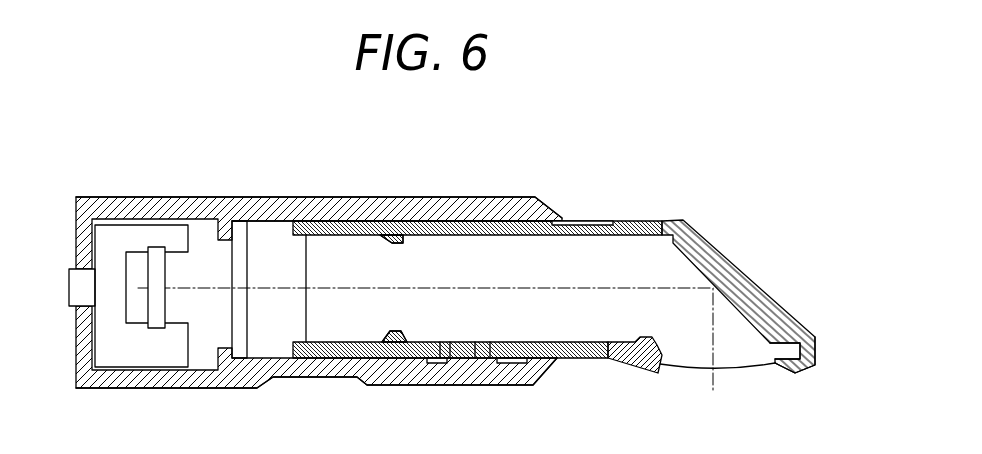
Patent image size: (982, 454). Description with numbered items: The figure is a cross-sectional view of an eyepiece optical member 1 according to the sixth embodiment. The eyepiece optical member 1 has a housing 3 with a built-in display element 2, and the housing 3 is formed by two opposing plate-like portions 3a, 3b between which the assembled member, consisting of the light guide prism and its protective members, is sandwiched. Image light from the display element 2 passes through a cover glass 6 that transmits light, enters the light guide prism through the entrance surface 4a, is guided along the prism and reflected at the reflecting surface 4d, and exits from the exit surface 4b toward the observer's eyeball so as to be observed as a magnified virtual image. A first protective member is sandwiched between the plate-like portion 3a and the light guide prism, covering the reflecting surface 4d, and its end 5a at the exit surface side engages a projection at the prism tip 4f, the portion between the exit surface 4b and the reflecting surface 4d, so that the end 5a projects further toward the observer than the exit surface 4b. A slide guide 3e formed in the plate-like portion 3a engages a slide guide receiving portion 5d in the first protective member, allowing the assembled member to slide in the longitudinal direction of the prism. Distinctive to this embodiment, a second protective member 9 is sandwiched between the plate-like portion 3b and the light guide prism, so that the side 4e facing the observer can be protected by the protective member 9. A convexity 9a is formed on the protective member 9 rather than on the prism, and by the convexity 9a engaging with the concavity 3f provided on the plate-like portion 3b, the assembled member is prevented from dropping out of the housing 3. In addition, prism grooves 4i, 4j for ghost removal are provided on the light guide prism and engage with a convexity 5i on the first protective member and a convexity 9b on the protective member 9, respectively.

The eyepiece optical member 1 is at (677, 147).
The display element 2 is at (92, 288).
The housing 3 is at (171, 197).
The plate-like portion 3a is at (438, 197).
The plate-like portion 3b is at (449, 385).
The slide guide 3e is at (330, 197).
The concavity 3f is at (447, 341).
The entrance surface 4a is at (305, 273).
The exit surface 4b is at (742, 370).
The reflecting surface 4d is at (715, 262).
The side 4e is at (330, 341).
The prism tip 4f is at (792, 343).
The prism groove 4i is at (391, 239).
The prism groove 4j is at (385, 332).
The end of the protective member 5a is at (815, 355).
The slide guide receiving portion 5d is at (587, 222).
The convexity 5i is at (405, 243).
The cover glass 6 is at (232, 270).
The protective member 9 is at (578, 360).
The convexity 9a is at (478, 341).
The convexity 9b is at (394, 336).